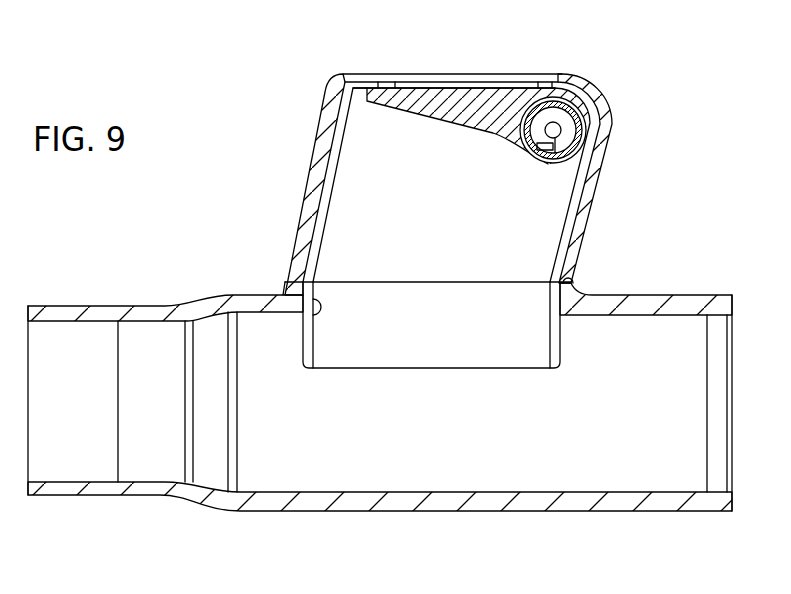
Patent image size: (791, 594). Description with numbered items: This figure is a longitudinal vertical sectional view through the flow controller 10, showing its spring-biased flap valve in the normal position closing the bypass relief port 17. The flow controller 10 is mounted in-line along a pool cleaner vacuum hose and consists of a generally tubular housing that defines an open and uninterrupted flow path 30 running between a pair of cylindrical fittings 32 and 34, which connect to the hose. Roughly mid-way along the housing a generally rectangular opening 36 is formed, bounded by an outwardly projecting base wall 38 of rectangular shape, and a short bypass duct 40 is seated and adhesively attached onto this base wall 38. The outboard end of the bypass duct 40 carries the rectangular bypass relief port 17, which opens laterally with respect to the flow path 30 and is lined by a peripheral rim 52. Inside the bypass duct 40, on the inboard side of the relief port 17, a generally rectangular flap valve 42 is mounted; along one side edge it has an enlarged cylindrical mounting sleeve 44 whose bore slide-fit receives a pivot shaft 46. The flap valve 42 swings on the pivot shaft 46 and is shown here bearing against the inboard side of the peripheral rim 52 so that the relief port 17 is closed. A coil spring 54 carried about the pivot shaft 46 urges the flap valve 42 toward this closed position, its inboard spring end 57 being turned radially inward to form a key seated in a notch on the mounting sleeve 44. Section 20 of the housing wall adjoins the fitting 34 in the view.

The flow controller 10 is at (213, 56).
The bypass relief port 17 is at (403, 82).
The outlet pipe section 20 is at (612, 295).
The flow path 30 is at (368, 493).
The cylindrical fitting 32 is at (110, 313).
The cylindrical fitting 34 is at (687, 504).
The rectangular opening 36 is at (313, 311).
The base wall 38 is at (287, 283).
The bypass duct 40 is at (592, 223).
The flap valve 42 is at (460, 118).
The mounting sleeve 44 is at (552, 153).
The pivot shaft 46 is at (556, 127).
The peripheral rim 52 is at (368, 82).
The coil spring 54 is at (593, 143).
The inboard spring end 57 is at (536, 148).